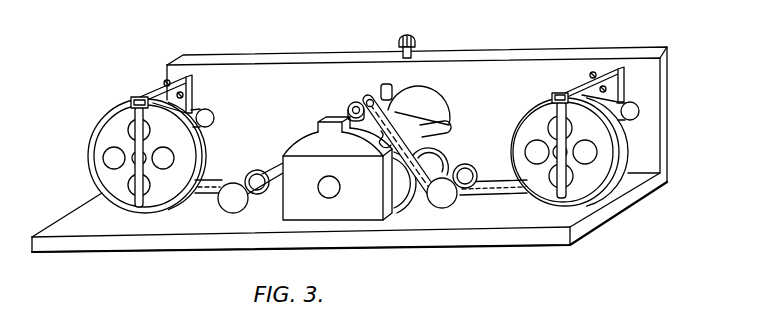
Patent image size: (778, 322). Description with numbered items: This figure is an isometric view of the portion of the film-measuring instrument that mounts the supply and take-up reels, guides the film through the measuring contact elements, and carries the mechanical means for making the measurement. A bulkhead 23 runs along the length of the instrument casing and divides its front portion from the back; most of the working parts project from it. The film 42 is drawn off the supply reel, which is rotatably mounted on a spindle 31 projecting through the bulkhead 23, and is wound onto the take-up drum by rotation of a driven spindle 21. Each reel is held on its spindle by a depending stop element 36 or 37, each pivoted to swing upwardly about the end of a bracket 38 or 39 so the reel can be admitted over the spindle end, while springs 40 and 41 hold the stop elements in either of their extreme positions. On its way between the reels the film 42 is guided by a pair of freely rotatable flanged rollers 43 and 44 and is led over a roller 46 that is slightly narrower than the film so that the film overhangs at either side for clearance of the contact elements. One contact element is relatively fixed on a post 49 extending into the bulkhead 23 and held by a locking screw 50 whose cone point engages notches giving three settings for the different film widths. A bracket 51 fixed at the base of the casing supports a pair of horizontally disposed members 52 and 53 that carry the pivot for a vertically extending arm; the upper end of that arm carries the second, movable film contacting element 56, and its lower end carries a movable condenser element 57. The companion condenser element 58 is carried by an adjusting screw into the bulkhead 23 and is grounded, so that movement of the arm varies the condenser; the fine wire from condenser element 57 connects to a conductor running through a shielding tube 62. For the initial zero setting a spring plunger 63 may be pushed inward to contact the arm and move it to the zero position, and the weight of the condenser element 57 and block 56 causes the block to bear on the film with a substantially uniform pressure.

The spindle 21 is at (207, 113).
The bulkhead 23 is at (302, 73).
The spindle 31 is at (630, 107).
The stop element 36 is at (560, 174).
The stop element 37 is at (132, 200).
The bracket 38 is at (582, 86).
The bracket 39 is at (157, 98).
The spring 40 is at (556, 96).
The spring 41 is at (132, 97).
The film 42 is at (501, 190).
The flanged roller 43 is at (447, 203).
The flanged roller 44 is at (243, 204).
The roller 46 is at (373, 98).
The post 49 is at (397, 90).
The locking screw 50 is at (415, 40).
The bracket 51 is at (337, 174).
The horizontally disposed member 52 is at (432, 112).
The horizontally disposed member 53 is at (303, 148).
The film contacting element 56 is at (351, 104).
The movable condenser element 57 is at (399, 205).
The condenser element 58 is at (421, 189).
The shielding tube 62 is at (448, 128).
The spring plunger 63 is at (319, 186).